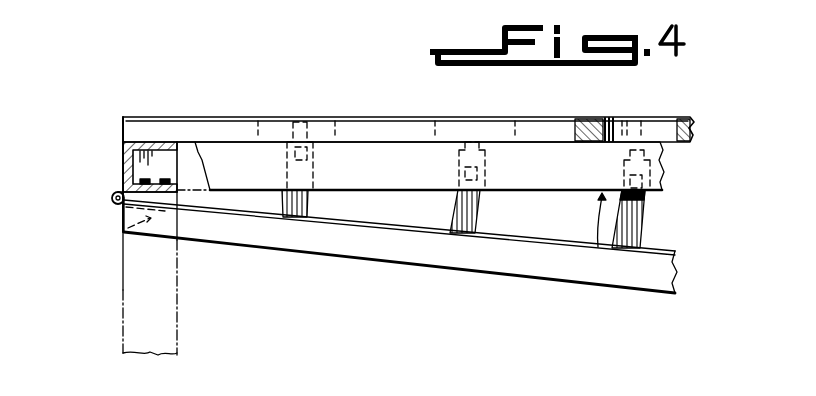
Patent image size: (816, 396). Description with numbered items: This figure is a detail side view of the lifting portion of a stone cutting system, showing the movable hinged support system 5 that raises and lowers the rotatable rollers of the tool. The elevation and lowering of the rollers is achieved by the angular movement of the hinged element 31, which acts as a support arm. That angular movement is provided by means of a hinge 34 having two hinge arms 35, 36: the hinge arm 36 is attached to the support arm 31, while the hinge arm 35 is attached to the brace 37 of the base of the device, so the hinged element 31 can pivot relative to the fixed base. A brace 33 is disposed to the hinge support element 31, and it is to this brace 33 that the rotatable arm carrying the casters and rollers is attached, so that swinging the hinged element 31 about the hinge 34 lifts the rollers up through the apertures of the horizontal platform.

The movable hinged support system 5 is at (672, 276).
The hinged element 31 is at (228, 232).
The brace 33 is at (302, 216).
The hinge 34 is at (113, 202).
The hinge arm 35 is at (123, 190).
The hinge arm 36 is at (121, 233).
The brace 37 is at (123, 158).